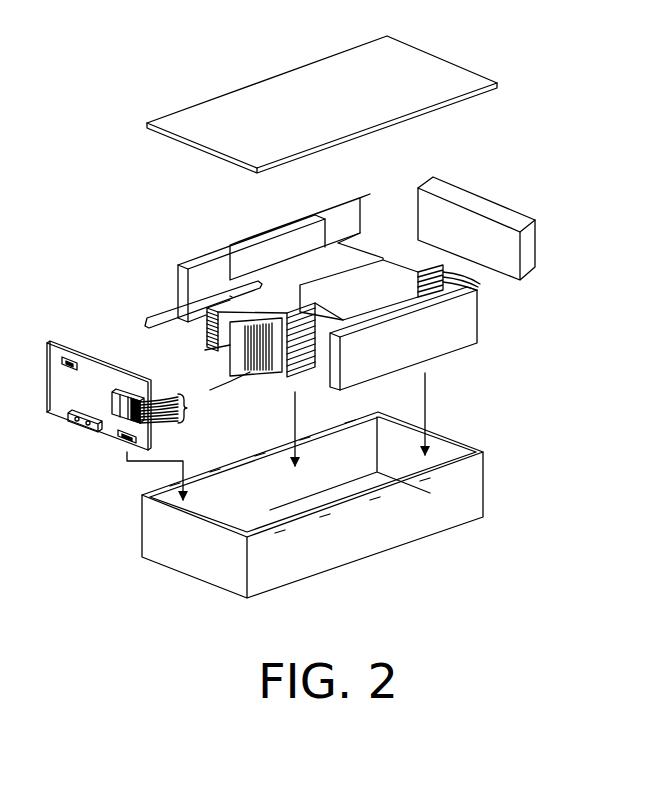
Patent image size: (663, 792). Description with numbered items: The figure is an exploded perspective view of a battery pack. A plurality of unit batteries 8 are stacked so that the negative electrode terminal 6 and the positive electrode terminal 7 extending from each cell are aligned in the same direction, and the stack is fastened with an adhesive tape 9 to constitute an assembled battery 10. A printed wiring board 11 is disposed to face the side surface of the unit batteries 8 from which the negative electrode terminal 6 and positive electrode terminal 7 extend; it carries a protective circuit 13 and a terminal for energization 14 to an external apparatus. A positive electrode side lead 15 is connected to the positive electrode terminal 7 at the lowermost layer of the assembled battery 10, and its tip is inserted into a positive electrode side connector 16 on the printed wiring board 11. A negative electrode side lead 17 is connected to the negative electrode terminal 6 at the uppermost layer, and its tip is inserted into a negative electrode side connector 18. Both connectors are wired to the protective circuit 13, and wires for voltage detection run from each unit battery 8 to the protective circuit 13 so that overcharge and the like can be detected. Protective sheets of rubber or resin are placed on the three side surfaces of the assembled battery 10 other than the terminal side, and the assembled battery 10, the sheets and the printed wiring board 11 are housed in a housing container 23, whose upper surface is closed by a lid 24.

The negative electrode terminal 6 is at (208, 295).
The positive electrode terminal 7 is at (293, 297).
The unit battery 8 is at (477, 287).
The adhesive tape 9 is at (378, 268).
The assembled battery 10 is at (283, 260).
The printed wiring board 11 is at (72, 346).
The protective circuit 13 is at (120, 390).
The terminal for energization 14 is at (88, 431).
The positive electrode side lead 15 is at (241, 386).
The positive electrode side connector 16 is at (152, 436).
The negative electrode side lead 17 is at (143, 318).
The negative electrode side connector 18 is at (73, 367).
The housing container 23 is at (473, 487).
The lid 24 is at (455, 73).